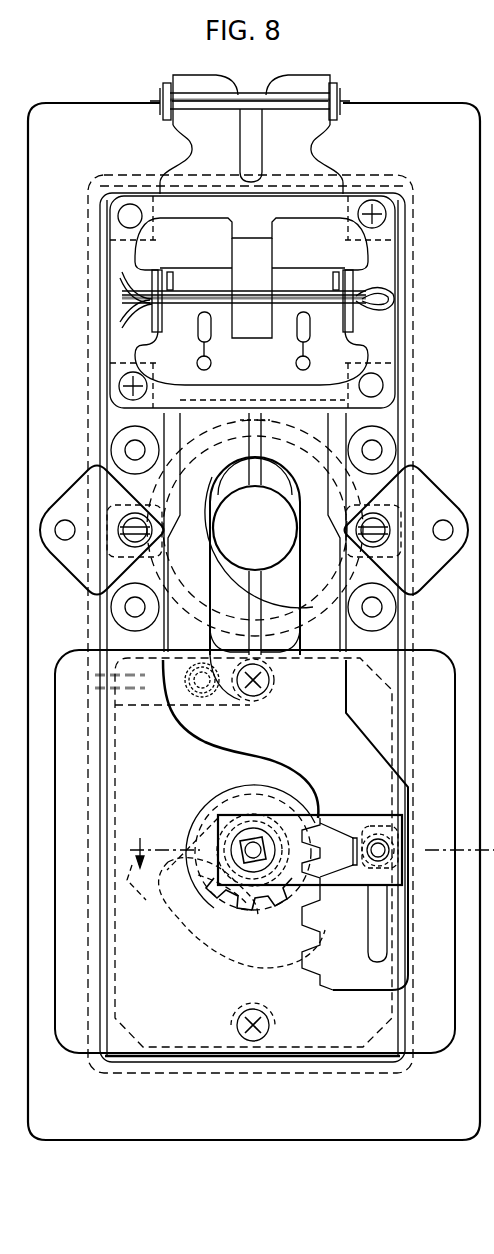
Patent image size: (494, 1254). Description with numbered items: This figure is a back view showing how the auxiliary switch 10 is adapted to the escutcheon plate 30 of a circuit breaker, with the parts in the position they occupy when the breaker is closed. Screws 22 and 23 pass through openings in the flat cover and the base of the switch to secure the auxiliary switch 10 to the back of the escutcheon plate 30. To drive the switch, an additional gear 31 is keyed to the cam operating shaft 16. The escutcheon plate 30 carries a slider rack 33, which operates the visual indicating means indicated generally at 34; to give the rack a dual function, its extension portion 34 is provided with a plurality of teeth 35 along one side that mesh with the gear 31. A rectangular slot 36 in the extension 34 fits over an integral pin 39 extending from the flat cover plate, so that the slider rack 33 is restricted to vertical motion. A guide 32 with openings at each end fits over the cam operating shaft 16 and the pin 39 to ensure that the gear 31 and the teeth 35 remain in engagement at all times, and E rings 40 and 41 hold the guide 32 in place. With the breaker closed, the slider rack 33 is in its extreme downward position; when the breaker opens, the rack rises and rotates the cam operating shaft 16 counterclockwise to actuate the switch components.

The auxiliary switch 10 is at (50, 1162).
The cam operating shaft 16 is at (256, 848).
The screw 22 is at (257, 1043).
The screw 23 is at (264, 681).
The escutcheon plate 30 is at (155, 1128).
The gear 31 is at (218, 797).
The guide 32 is at (340, 818).
The slider rack 33 is at (322, 530).
The extension portion 34 is at (397, 163).
The teeth 35 is at (310, 976).
The rectangular slot 36 is at (384, 932).
The pin 39 is at (388, 848).
The E ring 40 is at (236, 846).
The E ring 41 is at (388, 832).